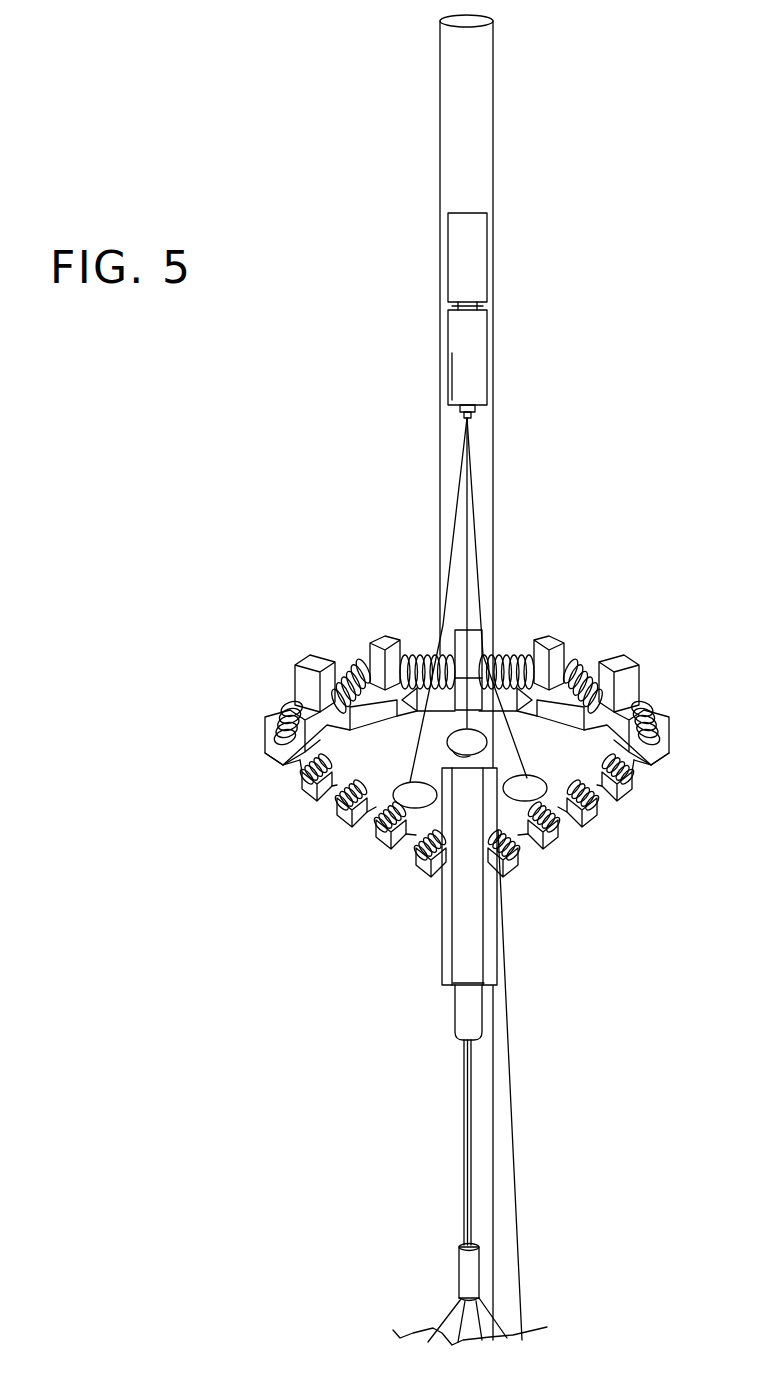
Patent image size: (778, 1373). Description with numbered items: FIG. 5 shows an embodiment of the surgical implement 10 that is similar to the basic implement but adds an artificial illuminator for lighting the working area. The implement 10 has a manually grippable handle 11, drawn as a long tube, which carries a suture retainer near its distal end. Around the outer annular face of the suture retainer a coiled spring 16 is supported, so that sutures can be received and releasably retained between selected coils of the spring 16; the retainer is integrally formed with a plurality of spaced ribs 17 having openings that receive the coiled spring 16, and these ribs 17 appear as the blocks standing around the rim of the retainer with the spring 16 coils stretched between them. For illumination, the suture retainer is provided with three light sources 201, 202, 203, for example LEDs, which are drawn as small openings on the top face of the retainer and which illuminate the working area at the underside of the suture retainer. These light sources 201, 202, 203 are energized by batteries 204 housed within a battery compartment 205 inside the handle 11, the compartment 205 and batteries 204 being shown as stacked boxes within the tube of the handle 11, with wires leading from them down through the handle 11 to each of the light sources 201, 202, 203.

The surgical implement 10 is at (262, 582).
The handle 11 is at (493, 108).
The coiled spring 16 is at (285, 709).
The spaced ribs 17 is at (632, 661).
The light source 201 is at (463, 748).
The light source 202 is at (414, 800).
The light source 203 is at (528, 792).
The batteries 204 is at (481, 318).
The battery compartment 205 is at (448, 278).